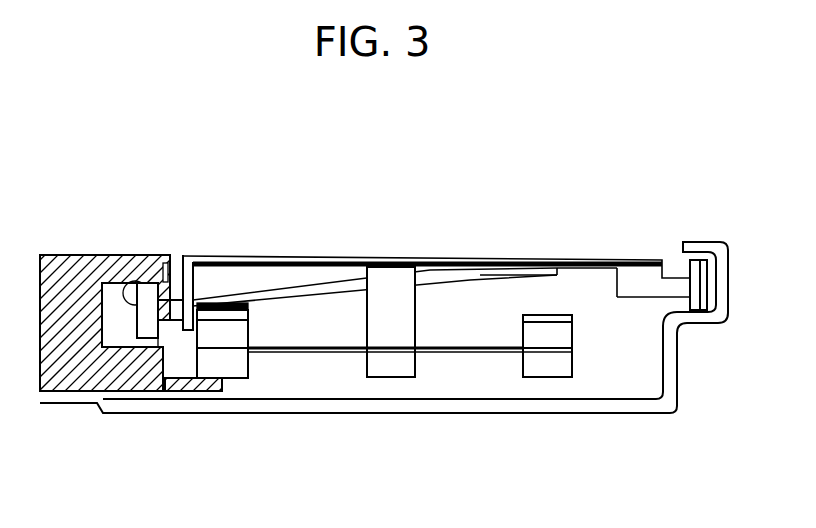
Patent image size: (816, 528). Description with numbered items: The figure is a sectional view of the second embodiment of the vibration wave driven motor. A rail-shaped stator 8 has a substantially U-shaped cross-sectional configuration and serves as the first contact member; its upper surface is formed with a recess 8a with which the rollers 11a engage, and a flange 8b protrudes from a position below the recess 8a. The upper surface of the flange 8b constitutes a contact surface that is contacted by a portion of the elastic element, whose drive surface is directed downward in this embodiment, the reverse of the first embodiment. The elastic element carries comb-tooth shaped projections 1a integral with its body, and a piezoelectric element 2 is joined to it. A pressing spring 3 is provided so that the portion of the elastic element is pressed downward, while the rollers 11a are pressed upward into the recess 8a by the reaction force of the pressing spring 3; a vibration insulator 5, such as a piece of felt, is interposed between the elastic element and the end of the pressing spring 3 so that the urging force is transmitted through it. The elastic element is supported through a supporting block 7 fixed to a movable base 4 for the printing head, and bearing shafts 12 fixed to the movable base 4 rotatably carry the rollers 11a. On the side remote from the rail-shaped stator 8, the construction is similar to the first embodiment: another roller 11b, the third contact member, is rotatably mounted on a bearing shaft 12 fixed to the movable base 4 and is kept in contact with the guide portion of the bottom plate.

The comb-tooth shaped projections 1a is at (548, 375).
The piezoelectric element 2 is at (567, 315).
The pressing spring 3 is at (312, 280).
The movable base 4 is at (447, 262).
The vibration insulator 5 is at (220, 306).
The supporting block 7 is at (410, 318).
The rail-shaped stator 8 is at (75, 272).
The recess 8a is at (123, 292).
The flange 8b is at (208, 388).
The roller 11a is at (176, 298).
The roller 11b is at (702, 277).
The bearing shaft 12 is at (178, 298).